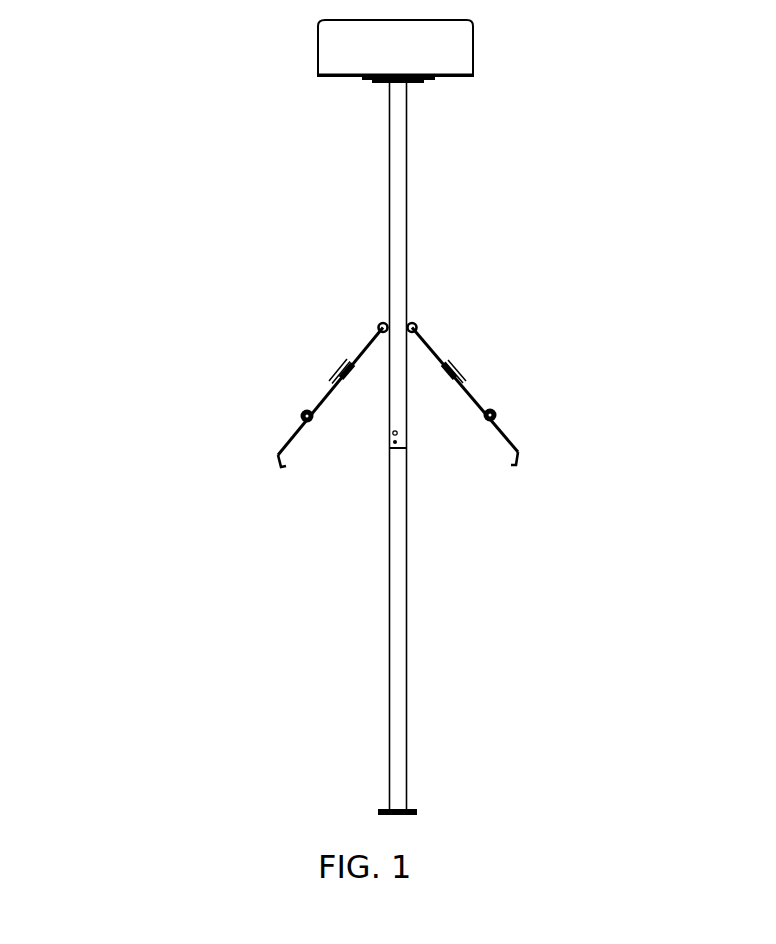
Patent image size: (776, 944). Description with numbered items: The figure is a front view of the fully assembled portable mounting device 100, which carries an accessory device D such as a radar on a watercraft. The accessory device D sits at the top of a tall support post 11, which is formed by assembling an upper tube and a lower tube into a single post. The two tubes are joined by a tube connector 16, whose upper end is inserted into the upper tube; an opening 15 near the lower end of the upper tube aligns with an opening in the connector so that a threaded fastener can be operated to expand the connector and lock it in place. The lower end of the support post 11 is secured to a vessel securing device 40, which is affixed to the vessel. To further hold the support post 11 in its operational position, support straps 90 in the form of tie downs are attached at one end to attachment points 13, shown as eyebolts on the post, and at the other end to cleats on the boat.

The accessory device D is at (447, 50).
The portable mounting device 100 is at (350, 254).
The support post 11 is at (432, 629).
The attachment points (eyebolts) 13 is at (425, 315).
The support straps 90 is at (480, 397).
The opening 15 is at (393, 434).
The tube connector 16 is at (422, 452).
The vessel securing device 40 is at (437, 810).